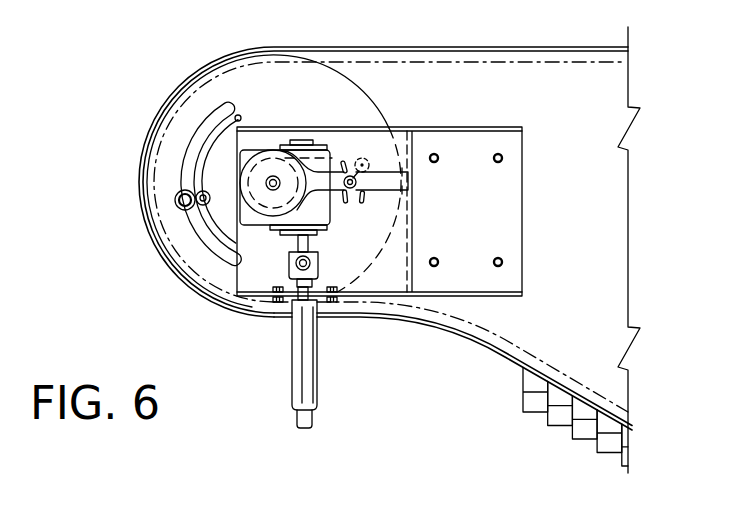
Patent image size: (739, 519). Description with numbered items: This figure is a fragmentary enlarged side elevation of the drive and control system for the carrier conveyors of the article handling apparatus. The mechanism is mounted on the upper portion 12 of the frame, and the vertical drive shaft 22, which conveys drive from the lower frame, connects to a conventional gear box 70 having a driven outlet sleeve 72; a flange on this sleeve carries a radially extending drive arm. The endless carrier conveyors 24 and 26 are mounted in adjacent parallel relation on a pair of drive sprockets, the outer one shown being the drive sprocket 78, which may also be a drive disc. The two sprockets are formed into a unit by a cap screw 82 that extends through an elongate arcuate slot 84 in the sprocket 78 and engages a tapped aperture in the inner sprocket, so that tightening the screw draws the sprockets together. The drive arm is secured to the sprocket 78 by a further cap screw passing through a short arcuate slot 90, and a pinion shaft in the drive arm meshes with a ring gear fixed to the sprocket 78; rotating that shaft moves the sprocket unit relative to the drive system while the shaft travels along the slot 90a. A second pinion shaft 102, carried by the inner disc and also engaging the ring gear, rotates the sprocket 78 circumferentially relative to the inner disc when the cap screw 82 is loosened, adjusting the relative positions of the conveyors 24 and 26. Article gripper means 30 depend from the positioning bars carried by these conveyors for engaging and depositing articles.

The upper portion of the frame 12 is at (453, 354).
The drive shaft 22 is at (318, 278).
The endless carrier conveyor 24 is at (383, 213).
The endless carrier conveyor 26 is at (580, 62).
The article gripper means 30 is at (512, 400).
The gear box 70 is at (312, 142).
The driven outlet sleeve 72 is at (272, 189).
The drive sprocket 78 is at (264, 68).
The cap screw 82 is at (197, 208).
The elongate arcuate slot 84 is at (242, 117).
The arcuate slot 90 is at (340, 205).
The slot 90a is at (367, 201).
The second pinion shaft 102 is at (175, 199).